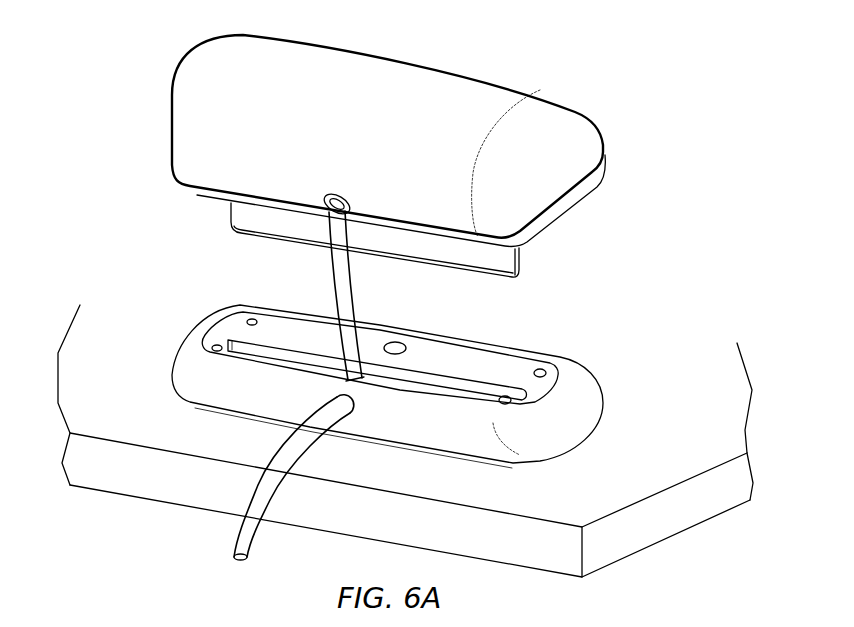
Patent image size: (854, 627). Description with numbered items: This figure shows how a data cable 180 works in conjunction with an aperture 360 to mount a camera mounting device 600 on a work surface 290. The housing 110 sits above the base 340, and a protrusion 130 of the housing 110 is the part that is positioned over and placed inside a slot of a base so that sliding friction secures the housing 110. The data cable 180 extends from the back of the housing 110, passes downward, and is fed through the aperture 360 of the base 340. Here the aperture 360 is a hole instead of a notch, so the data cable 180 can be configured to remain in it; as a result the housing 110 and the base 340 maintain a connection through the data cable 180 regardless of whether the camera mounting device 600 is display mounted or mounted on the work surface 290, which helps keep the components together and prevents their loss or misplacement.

The housing 110 is at (198, 87).
The protrusion 130 is at (250, 215).
The data cable 180 is at (347, 309).
The work surface 290 is at (610, 477).
The base 340 is at (190, 367).
The aperture 360 is at (359, 380).
The camera mounting device 600 is at (672, 157).